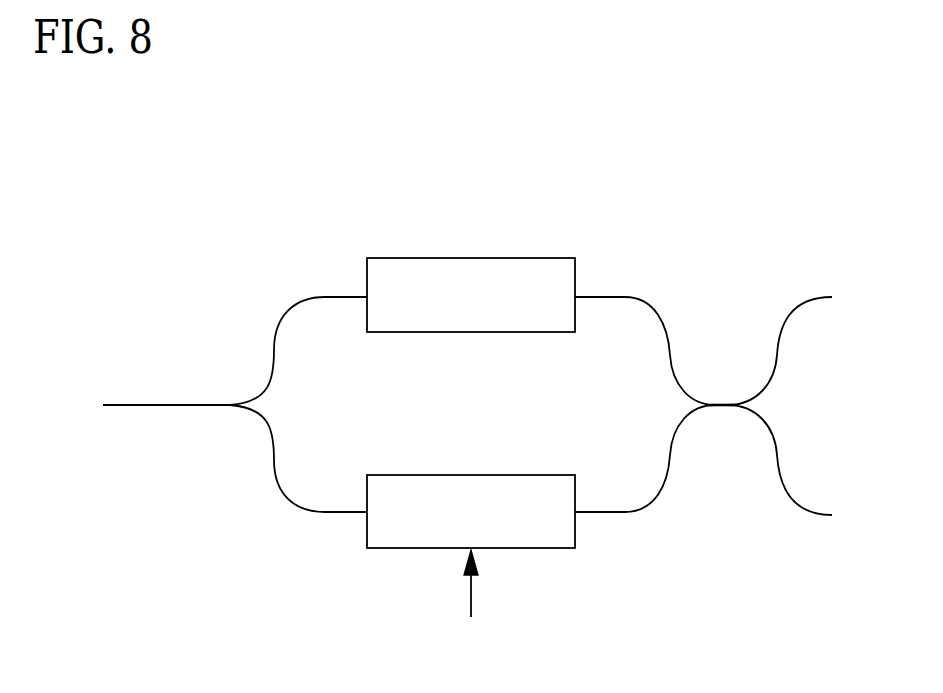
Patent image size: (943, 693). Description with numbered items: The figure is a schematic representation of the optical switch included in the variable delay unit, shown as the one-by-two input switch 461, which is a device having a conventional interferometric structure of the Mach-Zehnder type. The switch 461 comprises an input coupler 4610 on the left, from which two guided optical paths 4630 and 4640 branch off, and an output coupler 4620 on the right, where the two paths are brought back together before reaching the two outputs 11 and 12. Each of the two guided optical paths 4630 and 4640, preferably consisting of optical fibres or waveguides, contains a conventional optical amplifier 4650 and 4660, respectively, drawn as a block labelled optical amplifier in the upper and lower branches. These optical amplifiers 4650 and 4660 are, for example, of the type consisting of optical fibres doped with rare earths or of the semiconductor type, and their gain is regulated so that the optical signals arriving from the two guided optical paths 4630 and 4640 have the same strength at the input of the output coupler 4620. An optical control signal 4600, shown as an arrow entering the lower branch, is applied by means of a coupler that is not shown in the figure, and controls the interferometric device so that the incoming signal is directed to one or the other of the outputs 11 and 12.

The 1×2 input switch 461 is at (221, 311).
The input coupler 4610 is at (227, 407).
The output coupler 4620 is at (725, 405).
The guided optical path 4630 is at (280, 320).
The guided optical path 4640 is at (280, 487).
The optical amplifier 4650 is at (403, 332).
The optical amplifier 4660 is at (403, 548).
The optical control signal 4600 is at (471, 593).
The output 11 is at (783, 323).
The output 12 is at (783, 488).